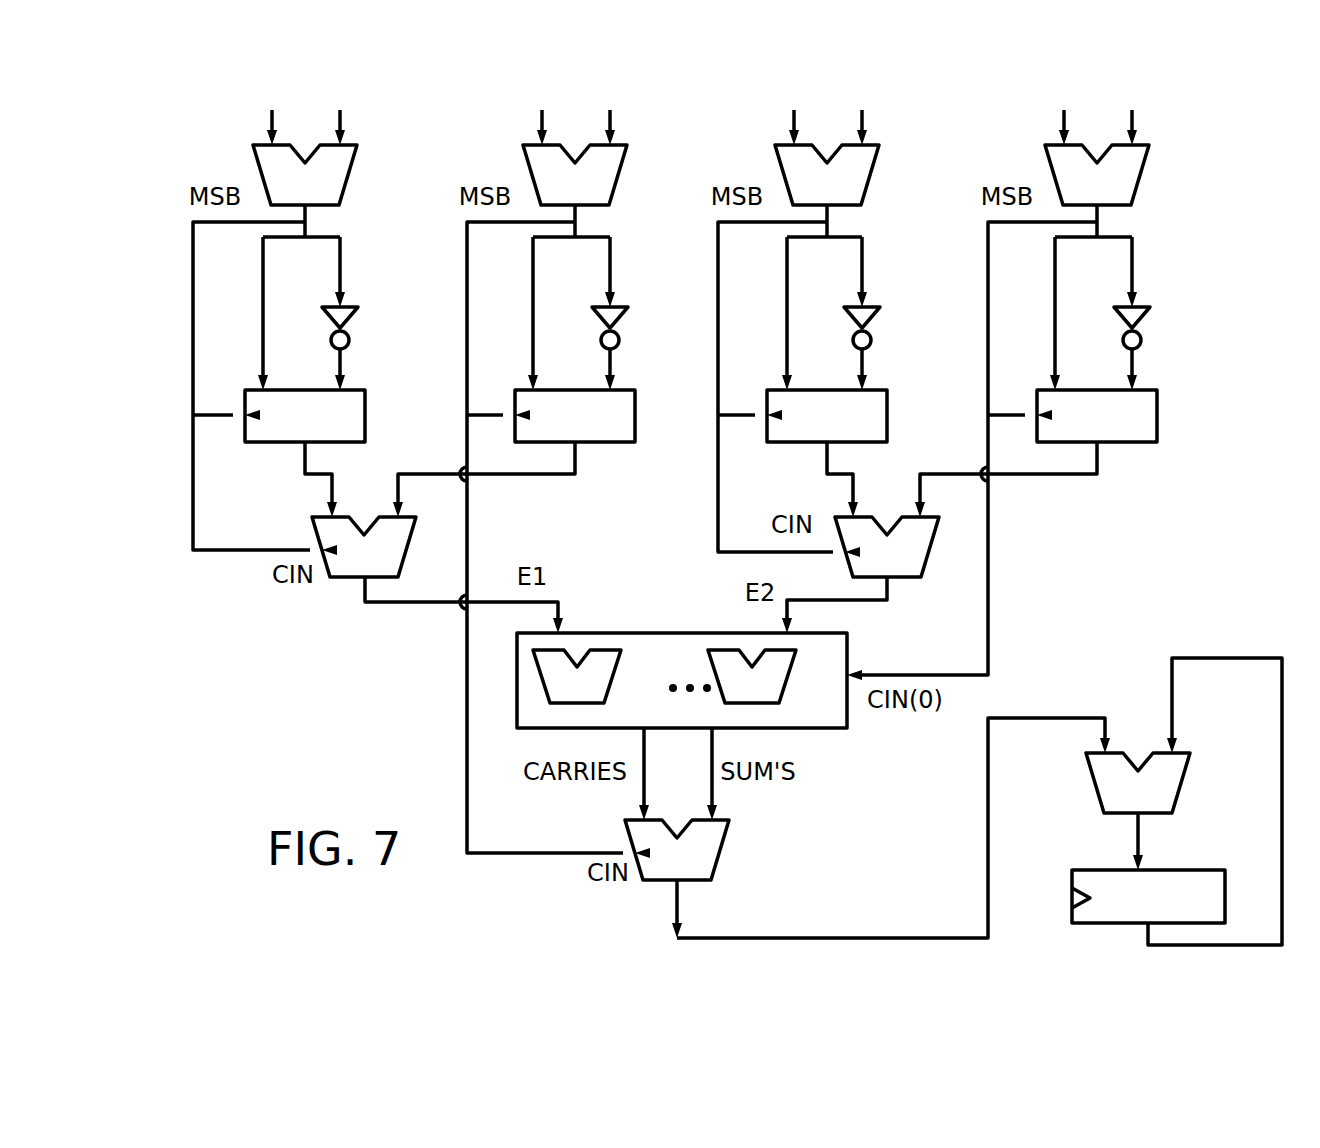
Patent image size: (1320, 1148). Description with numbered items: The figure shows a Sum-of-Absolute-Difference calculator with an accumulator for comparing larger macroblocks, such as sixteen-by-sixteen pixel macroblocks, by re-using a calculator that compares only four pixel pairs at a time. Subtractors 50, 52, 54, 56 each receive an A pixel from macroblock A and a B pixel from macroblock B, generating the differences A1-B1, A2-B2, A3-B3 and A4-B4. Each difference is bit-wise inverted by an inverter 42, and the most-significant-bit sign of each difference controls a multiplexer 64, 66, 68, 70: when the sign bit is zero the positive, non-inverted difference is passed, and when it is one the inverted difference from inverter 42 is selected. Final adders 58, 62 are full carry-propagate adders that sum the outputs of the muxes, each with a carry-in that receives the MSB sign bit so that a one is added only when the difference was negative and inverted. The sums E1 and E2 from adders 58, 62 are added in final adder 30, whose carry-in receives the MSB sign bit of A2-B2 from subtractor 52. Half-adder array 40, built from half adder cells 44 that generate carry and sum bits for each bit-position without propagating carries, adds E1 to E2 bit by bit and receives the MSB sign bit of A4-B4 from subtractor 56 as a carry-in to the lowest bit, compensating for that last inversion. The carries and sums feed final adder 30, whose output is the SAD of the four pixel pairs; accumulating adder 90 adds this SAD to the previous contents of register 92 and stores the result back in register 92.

The final adder 30 is at (695, 850).
The half-adder array 40 is at (682, 680).
The inverter 42 is at (754, 346).
The half adder cell 44 is at (688, 666).
The subtractor 50 is at (324, 139).
The subtractor 52 is at (594, 139).
The subtractor 54 is at (846, 139).
The subtractor 56 is at (1116, 139).
The final adder 58 is at (382, 547).
The final adder 62 is at (905, 547).
The multiplexer 64 is at (289, 431).
The multiplexer 66 is at (559, 431).
The multiplexer 68 is at (811, 431).
The multiplexer 70 is at (1081, 431).
The accumulating adder 90 is at (1156, 783).
The register 92 is at (1180, 915).